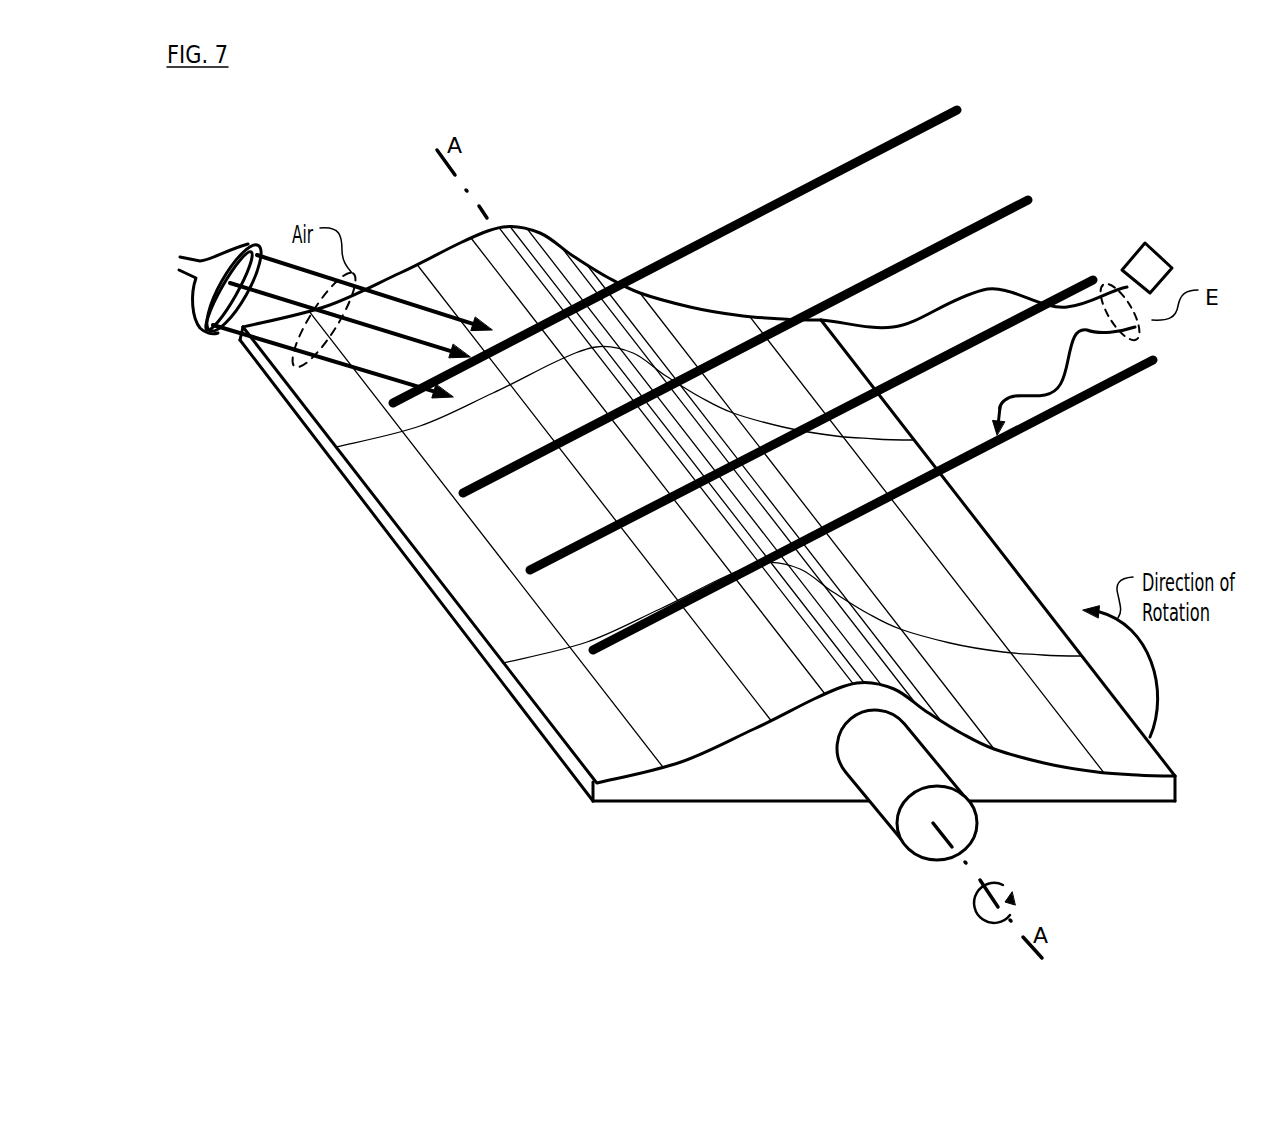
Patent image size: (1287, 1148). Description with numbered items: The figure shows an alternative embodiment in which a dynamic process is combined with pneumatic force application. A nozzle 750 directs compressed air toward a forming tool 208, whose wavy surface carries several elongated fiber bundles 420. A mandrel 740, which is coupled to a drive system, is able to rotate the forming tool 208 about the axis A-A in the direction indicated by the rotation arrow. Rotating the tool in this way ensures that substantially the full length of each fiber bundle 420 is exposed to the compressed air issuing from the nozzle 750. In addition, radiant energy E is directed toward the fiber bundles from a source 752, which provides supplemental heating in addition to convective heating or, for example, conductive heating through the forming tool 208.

The forming tool 208 is at (590, 262).
The fiber bundle 420 is at (807, 188).
The mandrel 740 is at (888, 781).
The nozzle 750 is at (223, 257).
The source 752 is at (1133, 262).